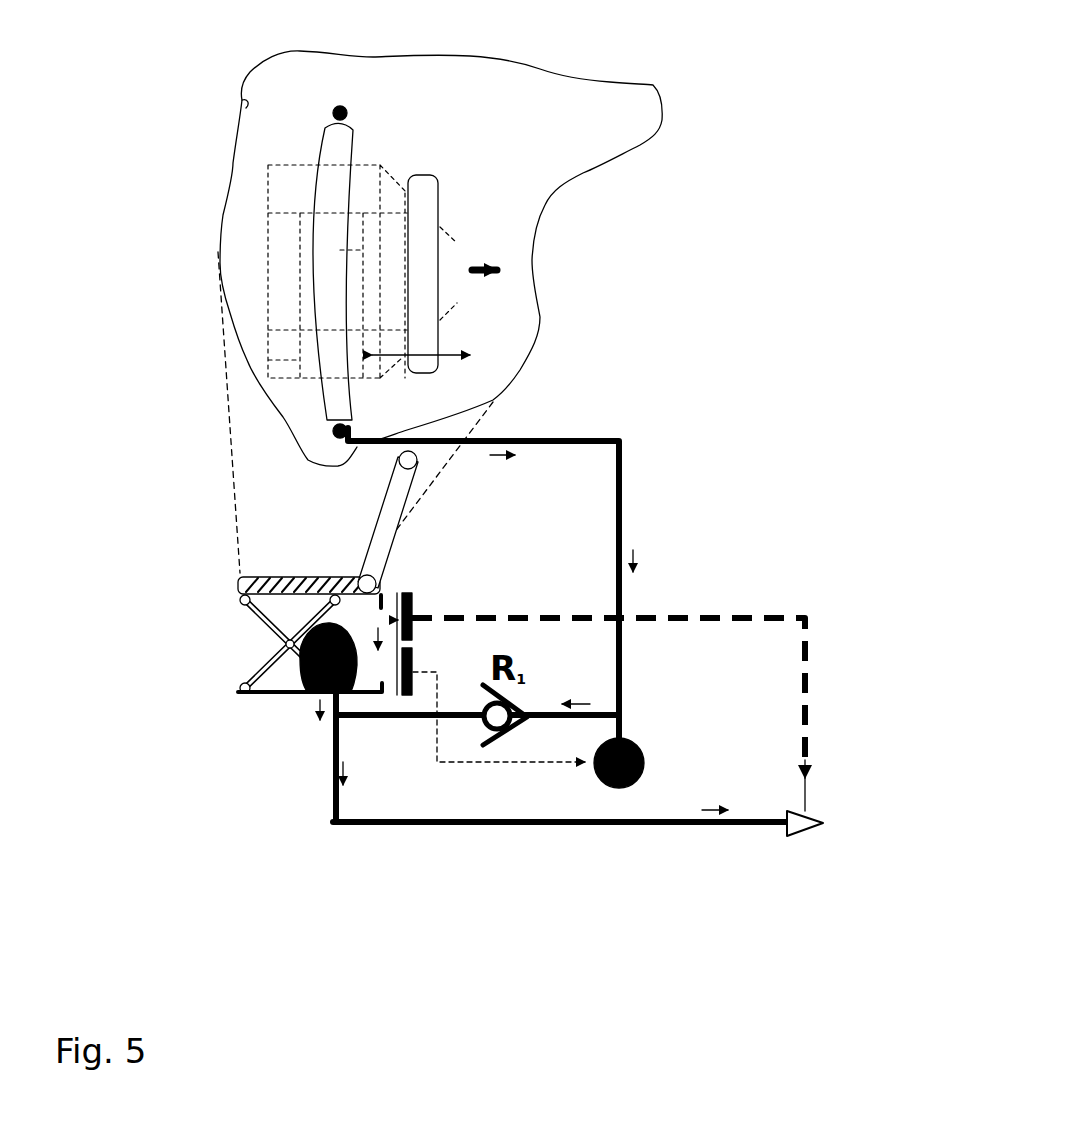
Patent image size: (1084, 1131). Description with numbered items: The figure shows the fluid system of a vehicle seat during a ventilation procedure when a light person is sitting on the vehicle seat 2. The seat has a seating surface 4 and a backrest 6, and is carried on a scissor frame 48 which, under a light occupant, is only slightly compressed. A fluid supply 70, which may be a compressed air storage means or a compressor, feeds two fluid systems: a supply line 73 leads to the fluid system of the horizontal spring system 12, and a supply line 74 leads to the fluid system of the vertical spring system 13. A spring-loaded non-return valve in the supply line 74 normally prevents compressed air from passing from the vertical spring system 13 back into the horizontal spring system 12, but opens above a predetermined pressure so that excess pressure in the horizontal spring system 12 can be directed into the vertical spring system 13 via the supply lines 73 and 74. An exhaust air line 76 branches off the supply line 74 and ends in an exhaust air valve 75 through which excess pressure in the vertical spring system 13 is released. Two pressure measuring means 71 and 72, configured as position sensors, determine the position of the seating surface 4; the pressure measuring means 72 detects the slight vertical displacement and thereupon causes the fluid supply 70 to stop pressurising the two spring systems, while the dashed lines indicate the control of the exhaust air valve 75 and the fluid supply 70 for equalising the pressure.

The vehicle 2 is at (150, 533).
The seating surface 4 is at (277, 572).
The backrest 6 is at (387, 510).
The horizontal spring system 12 is at (653, 85).
The vertical spring system 13 is at (308, 678).
The scissor frame 48 is at (235, 658).
The fluid supply 70 is at (641, 752).
The pressure measuring means 71 is at (417, 607).
The pressure measuring means 72 is at (413, 657).
The supply line 73 is at (620, 503).
The supply line 74 is at (449, 710).
The exhaust air valve 75 is at (797, 835).
The exhaust air line 76 is at (490, 826).